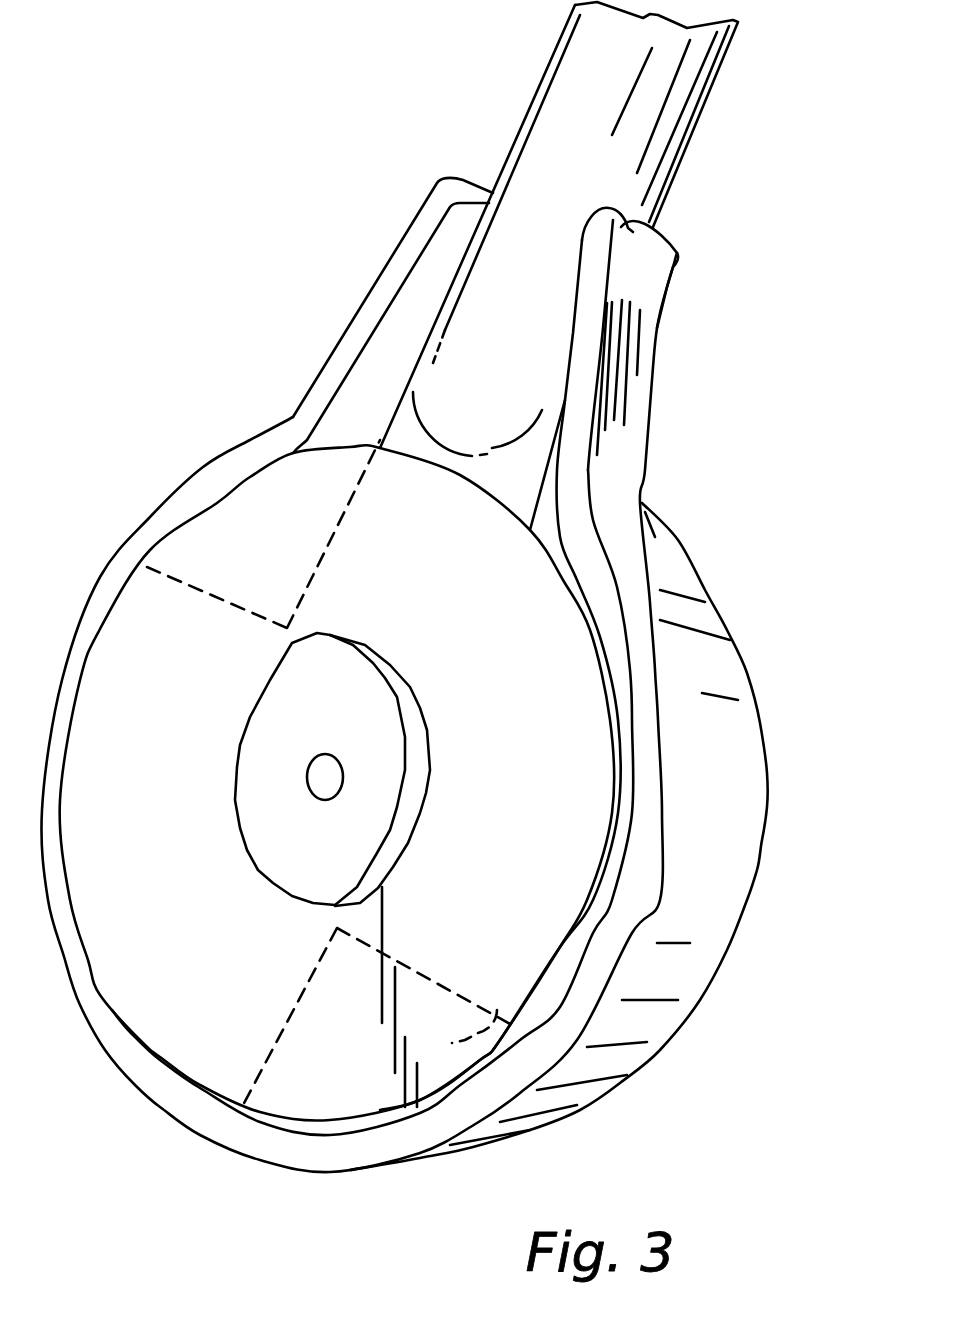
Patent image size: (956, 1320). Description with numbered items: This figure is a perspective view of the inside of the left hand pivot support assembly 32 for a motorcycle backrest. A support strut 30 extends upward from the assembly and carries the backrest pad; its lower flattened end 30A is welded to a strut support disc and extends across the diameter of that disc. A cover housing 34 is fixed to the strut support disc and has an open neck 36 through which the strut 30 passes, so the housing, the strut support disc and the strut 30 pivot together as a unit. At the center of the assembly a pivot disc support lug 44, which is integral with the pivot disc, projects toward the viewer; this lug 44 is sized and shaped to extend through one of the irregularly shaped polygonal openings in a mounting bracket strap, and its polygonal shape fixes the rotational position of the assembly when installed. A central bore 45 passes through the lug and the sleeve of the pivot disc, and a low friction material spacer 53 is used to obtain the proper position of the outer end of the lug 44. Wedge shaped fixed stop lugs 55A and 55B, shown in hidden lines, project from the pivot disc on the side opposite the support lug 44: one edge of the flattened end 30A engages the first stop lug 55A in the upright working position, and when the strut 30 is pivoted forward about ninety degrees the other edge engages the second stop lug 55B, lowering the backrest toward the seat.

The support strut 30 is at (613, 180).
The lower flattened end of strut 30A is at (430, 390).
The pivot support assembly 32 is at (707, 527).
The cover housing 34 is at (707, 902).
The open neck 36 is at (637, 397).
The pivot disc support lug 44 is at (388, 788).
The central bore 45 is at (312, 781).
The low friction material spacer 53 is at (550, 678).
The first stop lug 55A is at (267, 535).
The second stop lug 55B is at (497, 1010).